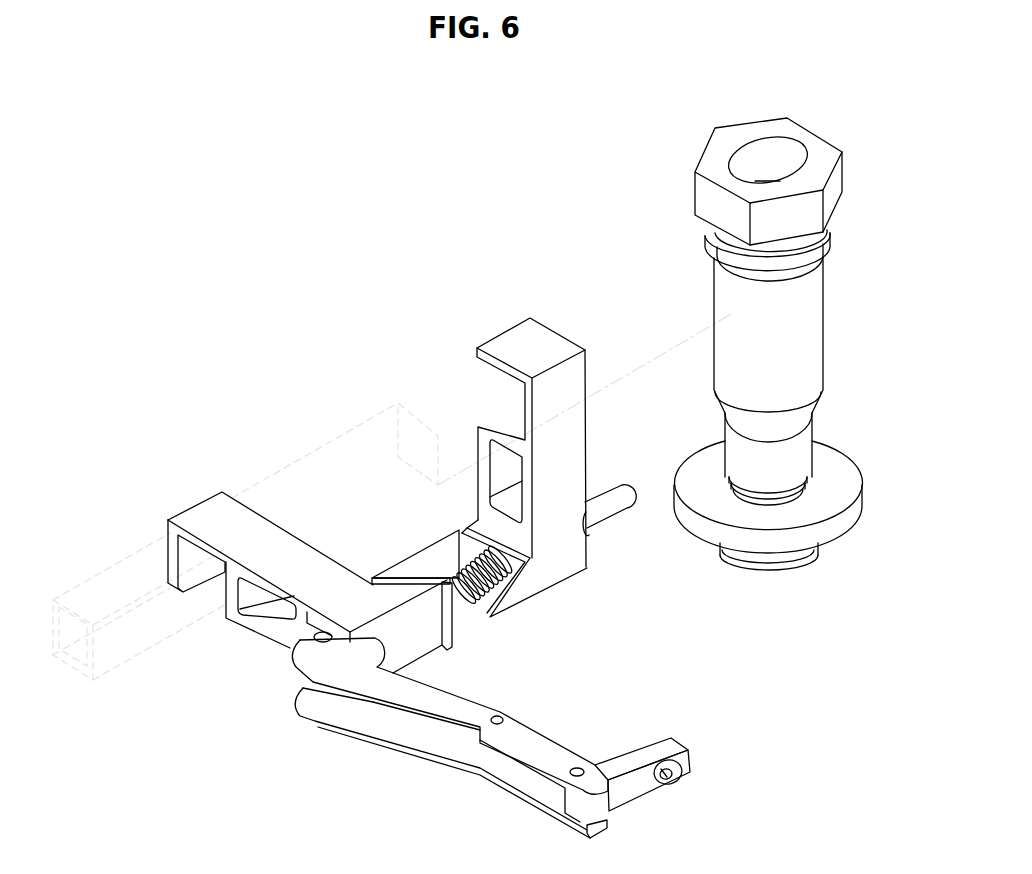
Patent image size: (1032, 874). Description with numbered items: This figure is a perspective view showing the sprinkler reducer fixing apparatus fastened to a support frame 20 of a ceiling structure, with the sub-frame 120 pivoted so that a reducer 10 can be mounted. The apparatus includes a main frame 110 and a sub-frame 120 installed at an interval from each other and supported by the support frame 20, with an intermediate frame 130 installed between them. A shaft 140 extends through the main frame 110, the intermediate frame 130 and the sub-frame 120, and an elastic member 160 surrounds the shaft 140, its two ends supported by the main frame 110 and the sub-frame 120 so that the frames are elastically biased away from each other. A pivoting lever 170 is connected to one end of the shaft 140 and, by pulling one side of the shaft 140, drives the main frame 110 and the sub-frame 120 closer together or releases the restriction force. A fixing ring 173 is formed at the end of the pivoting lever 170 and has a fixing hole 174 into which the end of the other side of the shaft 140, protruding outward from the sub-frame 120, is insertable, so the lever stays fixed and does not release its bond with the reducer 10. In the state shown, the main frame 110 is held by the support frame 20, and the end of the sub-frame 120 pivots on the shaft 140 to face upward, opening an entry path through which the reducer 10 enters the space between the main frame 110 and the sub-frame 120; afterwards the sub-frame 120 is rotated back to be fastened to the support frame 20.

The reducer 10 is at (818, 320).
The support frame 20 is at (113, 570).
The main frame 110 is at (225, 533).
The sub-frame 120 is at (565, 455).
The intermediate frame 130 is at (405, 573).
The shaft 140 is at (603, 525).
The elastic member 160 is at (467, 613).
The pivoting lever 170 is at (458, 709).
The fixing ring 173 is at (632, 795).
The fixing hole 174 is at (672, 770).